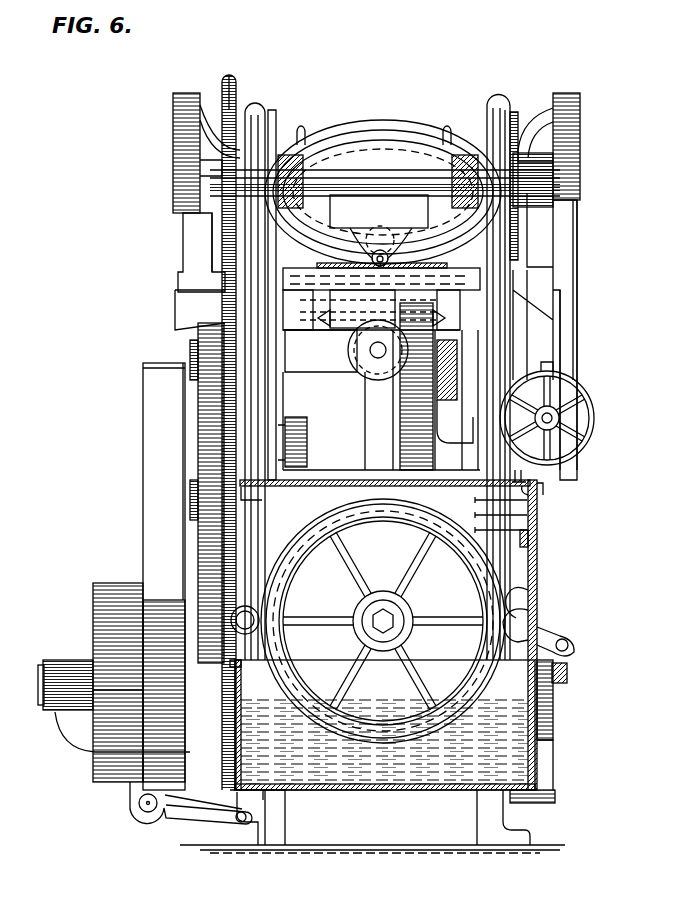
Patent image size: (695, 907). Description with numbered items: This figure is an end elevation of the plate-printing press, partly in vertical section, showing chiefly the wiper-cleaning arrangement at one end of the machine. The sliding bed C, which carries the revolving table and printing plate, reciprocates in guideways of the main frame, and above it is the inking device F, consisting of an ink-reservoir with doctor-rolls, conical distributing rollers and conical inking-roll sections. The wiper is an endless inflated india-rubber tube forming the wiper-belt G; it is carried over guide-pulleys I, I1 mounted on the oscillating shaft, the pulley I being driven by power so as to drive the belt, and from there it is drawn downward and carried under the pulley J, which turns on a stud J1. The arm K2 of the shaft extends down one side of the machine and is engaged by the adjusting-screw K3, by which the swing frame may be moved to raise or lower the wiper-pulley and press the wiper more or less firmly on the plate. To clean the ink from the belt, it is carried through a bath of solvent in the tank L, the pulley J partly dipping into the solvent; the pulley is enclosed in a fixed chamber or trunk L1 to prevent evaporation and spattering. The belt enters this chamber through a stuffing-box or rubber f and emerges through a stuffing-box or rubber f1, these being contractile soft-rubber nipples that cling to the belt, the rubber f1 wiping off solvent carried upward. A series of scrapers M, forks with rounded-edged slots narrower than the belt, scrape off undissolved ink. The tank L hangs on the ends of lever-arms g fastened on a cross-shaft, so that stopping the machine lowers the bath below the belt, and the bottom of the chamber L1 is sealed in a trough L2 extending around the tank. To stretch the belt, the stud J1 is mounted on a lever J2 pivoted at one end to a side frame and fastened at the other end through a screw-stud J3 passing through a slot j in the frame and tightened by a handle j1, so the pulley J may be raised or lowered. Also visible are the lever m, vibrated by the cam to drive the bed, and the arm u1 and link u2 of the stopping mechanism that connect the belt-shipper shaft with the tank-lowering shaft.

The guide-pulley I is at (268, 126).
The guide-pulley I1 is at (490, 122).
The arm K2 is at (575, 276).
The adjusting-screw K3 is at (560, 420).
The stuffing-box or rubber f1 is at (524, 474).
The lever m is at (436, 386).
The sliding bed C is at (381, 321).
The inking device F is at (379, 230).
The wiper-belt G is at (259, 571).
The pulley J is at (383, 621).
The stud J1 is at (385, 620).
The lever J2 is at (318, 604).
The screw-stud J3 is at (528, 622).
The slot j is at (522, 594).
The handle j1 is at (573, 641).
The lever-arm g is at (568, 679).
The tank L is at (398, 787).
The chamber or trunk L1 is at (538, 550).
The trough L2 is at (547, 724).
The scrapers M is at (476, 508).
The stuffing-box or rubber f is at (262, 498).
The arm u1 is at (191, 810).
The link u2 is at (226, 810).